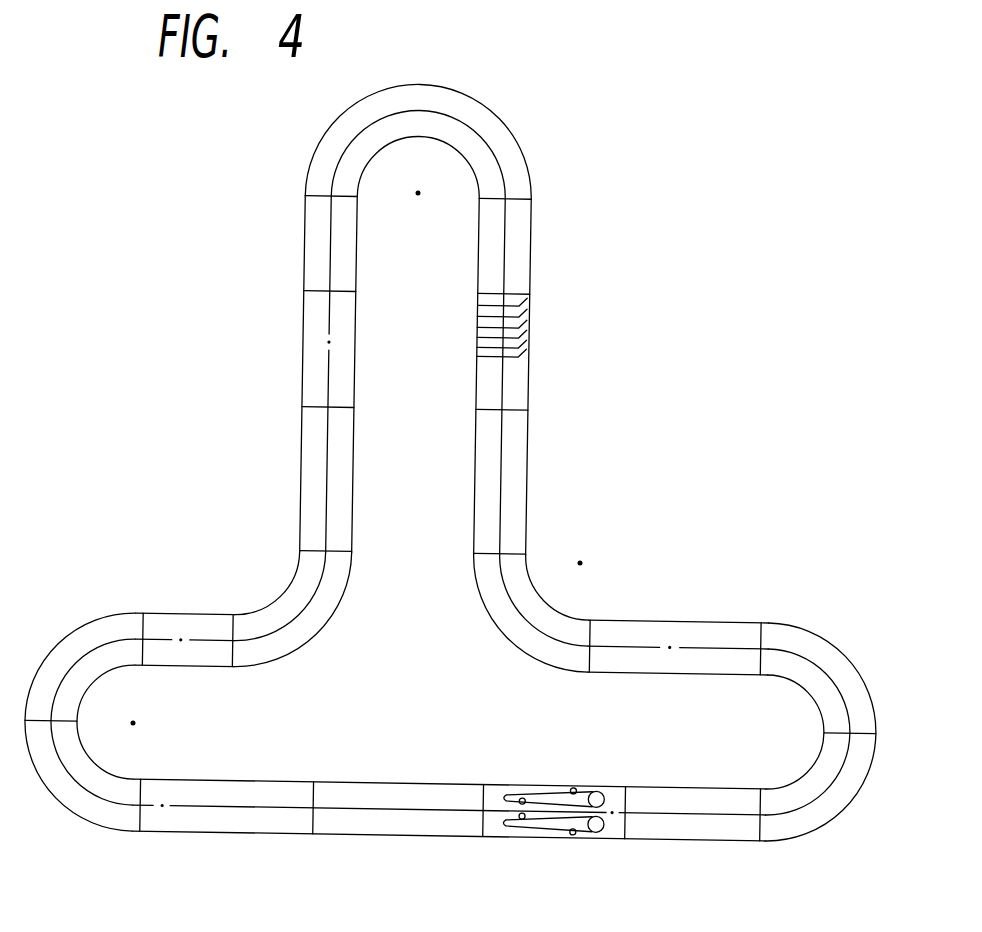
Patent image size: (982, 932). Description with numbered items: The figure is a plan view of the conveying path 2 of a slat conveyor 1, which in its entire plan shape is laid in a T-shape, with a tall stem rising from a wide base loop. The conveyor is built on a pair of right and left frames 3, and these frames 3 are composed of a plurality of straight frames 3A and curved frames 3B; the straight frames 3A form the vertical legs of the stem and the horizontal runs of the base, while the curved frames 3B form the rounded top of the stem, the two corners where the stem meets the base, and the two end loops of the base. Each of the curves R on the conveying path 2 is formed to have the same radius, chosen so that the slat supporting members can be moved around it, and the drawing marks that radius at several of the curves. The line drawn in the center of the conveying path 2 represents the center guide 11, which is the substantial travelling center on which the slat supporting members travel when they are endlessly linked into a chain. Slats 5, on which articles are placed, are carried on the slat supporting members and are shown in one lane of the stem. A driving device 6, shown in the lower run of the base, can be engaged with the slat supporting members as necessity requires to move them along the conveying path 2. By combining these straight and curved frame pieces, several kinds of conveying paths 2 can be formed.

The slat conveyor 1 is at (454, 460).
The conveying path 2 is at (322, 350).
The frames 3 is at (474, 506).
The straight frames 3A is at (299, 478).
The curved frames 3B is at (329, 629).
The slats 5 is at (514, 336).
The driving device 6 is at (548, 790).
The center guide 11 is at (500, 467).
The curves R is at (489, 155).